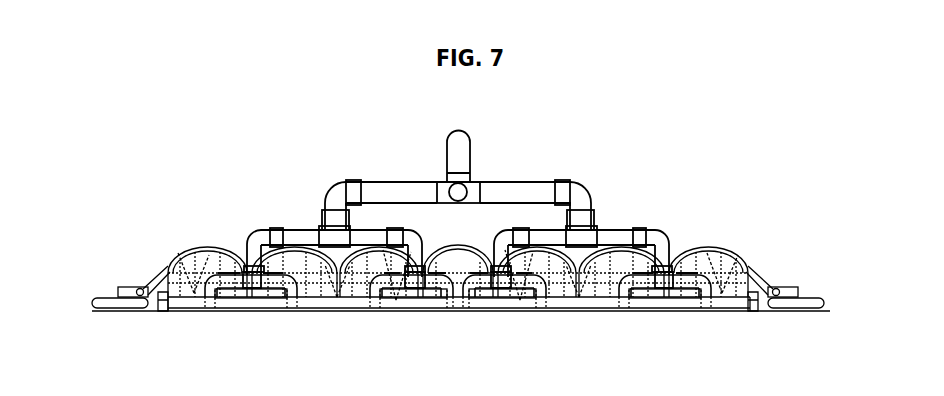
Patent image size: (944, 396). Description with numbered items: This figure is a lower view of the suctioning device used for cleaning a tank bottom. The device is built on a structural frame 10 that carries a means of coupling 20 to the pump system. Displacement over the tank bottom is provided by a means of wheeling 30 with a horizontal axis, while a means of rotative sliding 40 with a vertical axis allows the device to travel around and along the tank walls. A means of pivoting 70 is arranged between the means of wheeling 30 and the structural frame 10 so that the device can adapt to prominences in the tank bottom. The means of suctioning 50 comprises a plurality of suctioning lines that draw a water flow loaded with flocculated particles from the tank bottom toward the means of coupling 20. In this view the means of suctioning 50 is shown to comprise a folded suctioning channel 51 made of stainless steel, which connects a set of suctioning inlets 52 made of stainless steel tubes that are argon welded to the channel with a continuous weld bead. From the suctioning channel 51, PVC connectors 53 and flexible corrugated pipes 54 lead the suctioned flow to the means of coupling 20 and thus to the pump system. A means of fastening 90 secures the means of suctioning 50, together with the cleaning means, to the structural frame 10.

The structural frame 10 is at (187, 248).
The means of coupling 20 is at (430, 181).
The means of wheeling 30 is at (183, 314).
The means of rotative sliding 40 is at (117, 306).
The means of suctioning 50 is at (429, 303).
The folded suctioning channel 51 is at (557, 303).
The suctioning inlets 52 is at (710, 303).
The PVC connectors 53 is at (479, 284).
The flexible corrugated pipes 54 is at (517, 288).
The means of pivoting 70 is at (747, 268).
The means of fastening 90 is at (733, 268).